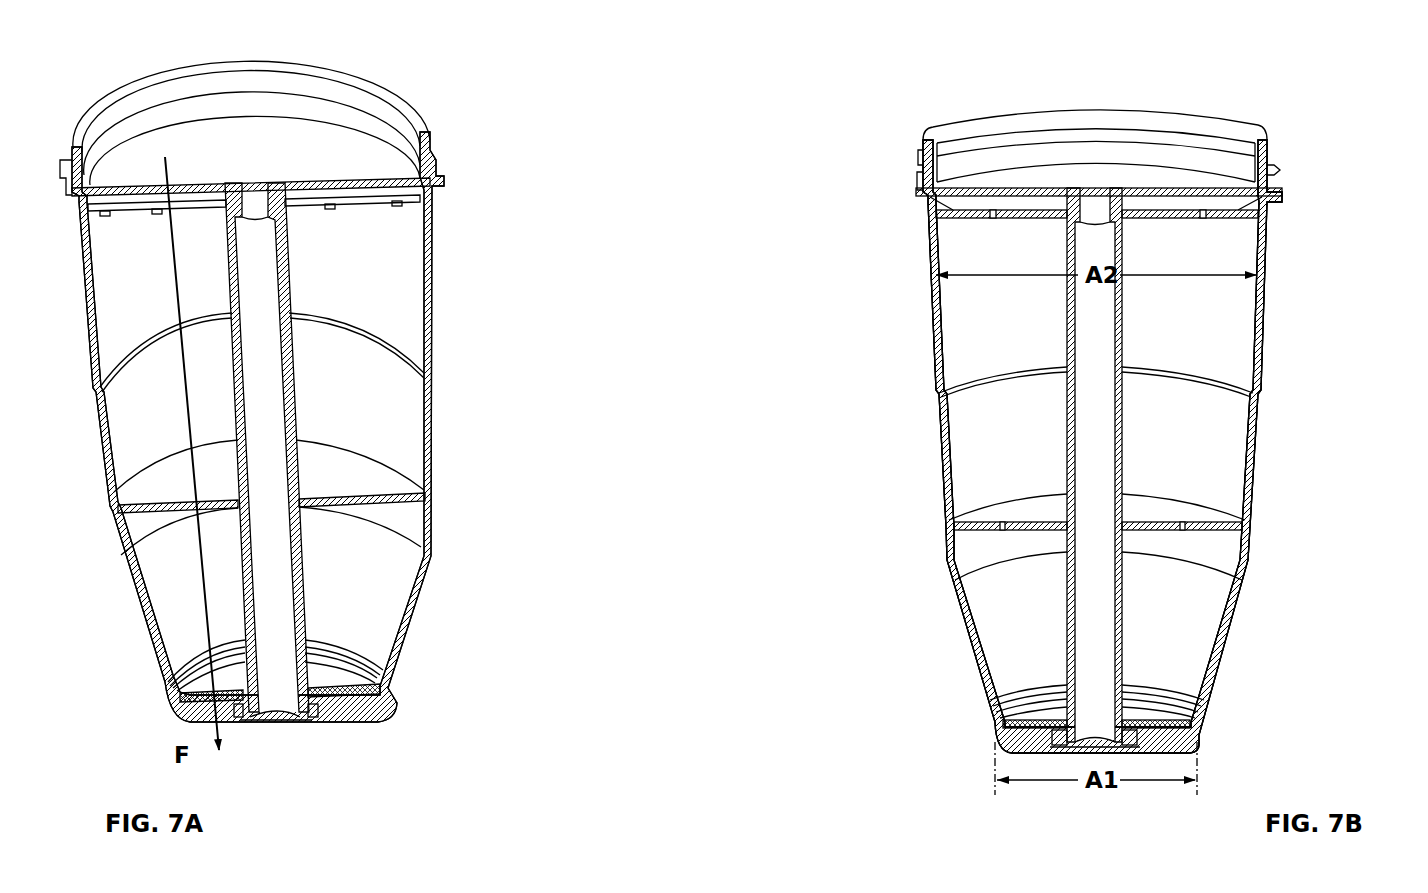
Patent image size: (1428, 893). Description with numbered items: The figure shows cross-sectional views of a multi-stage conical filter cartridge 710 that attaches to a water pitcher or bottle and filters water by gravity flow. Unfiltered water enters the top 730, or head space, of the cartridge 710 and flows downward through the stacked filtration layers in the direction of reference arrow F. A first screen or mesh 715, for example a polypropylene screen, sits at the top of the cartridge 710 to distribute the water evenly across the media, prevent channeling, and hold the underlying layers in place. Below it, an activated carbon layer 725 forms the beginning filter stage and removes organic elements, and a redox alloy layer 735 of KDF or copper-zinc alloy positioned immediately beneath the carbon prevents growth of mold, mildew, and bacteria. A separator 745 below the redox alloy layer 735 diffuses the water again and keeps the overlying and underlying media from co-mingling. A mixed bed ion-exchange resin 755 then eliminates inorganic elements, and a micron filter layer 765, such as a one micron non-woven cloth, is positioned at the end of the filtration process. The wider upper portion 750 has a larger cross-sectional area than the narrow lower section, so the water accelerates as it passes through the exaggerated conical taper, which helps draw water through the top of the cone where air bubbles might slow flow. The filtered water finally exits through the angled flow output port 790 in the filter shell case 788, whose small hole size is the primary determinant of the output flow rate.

In FIG. 7A, the conical filter cartridge 710 is at (640, 74).
In FIG. 7B, the conical filter cartridge 710 is at (1186, 72).
In FIG. 7A, the first screen or mesh 715 is at (438, 188).
In FIG. 7B, the first screen or mesh 715 is at (926, 200).
In FIG. 7A, the activated carbon layer 725 is at (405, 287).
In FIG. 7B, the activated carbon layer 725 is at (948, 297).
In FIG. 7A, the top (head space) of the cartridge 730 is at (313, 135).
In FIG. 7A, the redox alloy layer 735 is at (380, 442).
In FIG. 7B, the redox alloy layer 735 is at (1005, 492).
In FIG. 7A, the separator 745 is at (433, 500).
In FIG. 7B, the separator 745 is at (944, 530).
In FIG. 7B, the upper portion 750 is at (1276, 292).
In FIG. 7A, the mixed bed ion-exchange resin 755 is at (402, 578).
In FIG. 7B, the mixed bed ion-exchange resin 755 is at (987, 622).
In FIG. 7A, the micron filter layer 765 is at (357, 683).
In FIG. 7B, the micron filter layer 765 is at (1030, 723).
In FIG. 7A, the filter shell case 788 is at (398, 701).
In FIG. 7B, the filter shell case 788 is at (990, 744).
In FIG. 7A, the angled flow output port 790 is at (282, 733).